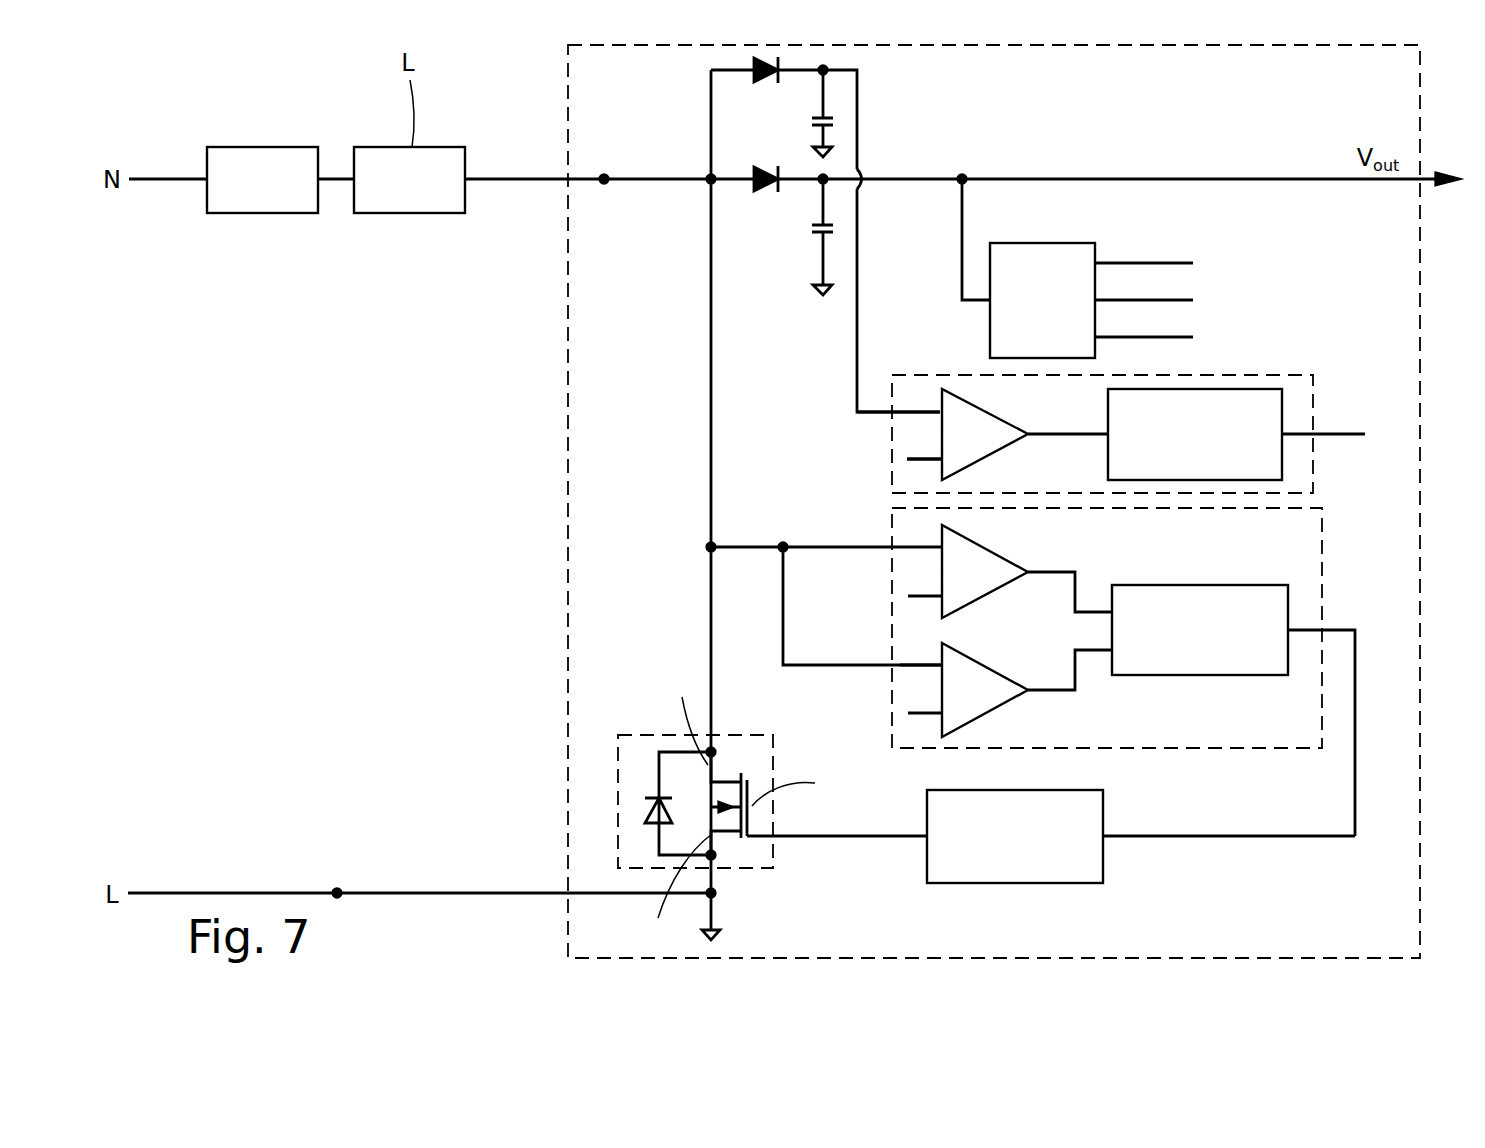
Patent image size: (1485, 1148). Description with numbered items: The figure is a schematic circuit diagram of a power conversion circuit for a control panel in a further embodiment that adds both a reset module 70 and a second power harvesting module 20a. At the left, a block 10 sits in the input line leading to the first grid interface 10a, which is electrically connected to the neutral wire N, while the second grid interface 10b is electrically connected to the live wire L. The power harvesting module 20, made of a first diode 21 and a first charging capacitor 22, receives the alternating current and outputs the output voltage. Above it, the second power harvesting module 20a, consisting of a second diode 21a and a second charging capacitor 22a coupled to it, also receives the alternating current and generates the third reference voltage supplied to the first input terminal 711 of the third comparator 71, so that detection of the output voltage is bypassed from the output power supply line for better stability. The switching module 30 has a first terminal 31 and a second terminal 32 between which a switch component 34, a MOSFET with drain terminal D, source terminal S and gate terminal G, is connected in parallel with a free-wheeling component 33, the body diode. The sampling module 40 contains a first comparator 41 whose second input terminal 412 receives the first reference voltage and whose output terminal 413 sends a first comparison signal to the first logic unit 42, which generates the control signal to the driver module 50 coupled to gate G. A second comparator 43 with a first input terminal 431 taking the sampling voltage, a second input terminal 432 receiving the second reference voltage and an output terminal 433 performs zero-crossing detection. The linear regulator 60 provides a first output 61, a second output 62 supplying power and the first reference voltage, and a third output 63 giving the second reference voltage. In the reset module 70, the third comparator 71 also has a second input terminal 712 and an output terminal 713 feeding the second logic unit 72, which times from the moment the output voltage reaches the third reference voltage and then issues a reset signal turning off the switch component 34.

The input filter unit 10 is at (257, 147).
The first grid interface 10a is at (604, 175).
The second grid interface 10b is at (337, 888).
The power harvesting module 20 is at (707, 240).
The first diode 21 is at (752, 183).
The first charging capacitor 22 is at (822, 234).
The second power harvesting module 20a is at (860, 233).
The second diode 21a is at (780, 72).
The second charging capacitor 22a is at (932, 55).
The switching module 30 is at (689, 778).
The first terminal 31 is at (713, 750).
The second terminal 32 is at (715, 856).
The free-wheeling component 33 is at (648, 810).
The switch component 34 is at (753, 848).
The sampling module 40 is at (1033, 672).
The first comparator 41 is at (985, 548).
The second input terminal 412 is at (936, 595).
The output terminal 413 is at (1030, 572).
The first logic unit 42 is at (1192, 585).
The second comparator 43 is at (1000, 708).
The first input terminal 431 is at (940, 665).
The second input terminal 432 is at (940, 713).
The output terminal 433 is at (1025, 688).
The driver module 50 is at (1105, 800).
The linear regulator 60 is at (1053, 243).
The first output 61 is at (1175, 263).
The second output 62 is at (1175, 300).
The third output 63 is at (1175, 337).
The reset module 70 is at (1100, 400).
The third comparator 71 is at (975, 392).
The first input terminal 711 is at (940, 412).
The second input terminal 712 is at (940, 460).
The output terminal 713 is at (1030, 434).
The second logic unit 72 is at (1255, 389).